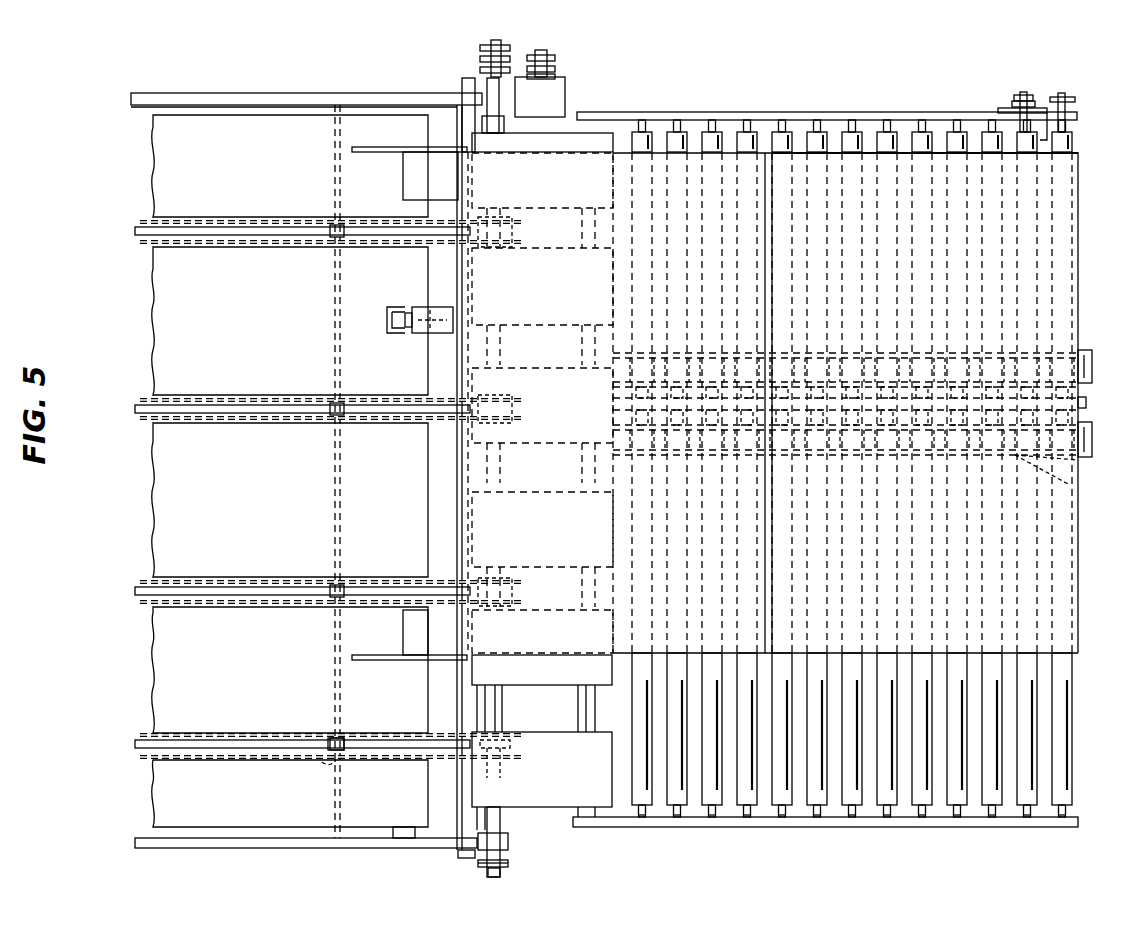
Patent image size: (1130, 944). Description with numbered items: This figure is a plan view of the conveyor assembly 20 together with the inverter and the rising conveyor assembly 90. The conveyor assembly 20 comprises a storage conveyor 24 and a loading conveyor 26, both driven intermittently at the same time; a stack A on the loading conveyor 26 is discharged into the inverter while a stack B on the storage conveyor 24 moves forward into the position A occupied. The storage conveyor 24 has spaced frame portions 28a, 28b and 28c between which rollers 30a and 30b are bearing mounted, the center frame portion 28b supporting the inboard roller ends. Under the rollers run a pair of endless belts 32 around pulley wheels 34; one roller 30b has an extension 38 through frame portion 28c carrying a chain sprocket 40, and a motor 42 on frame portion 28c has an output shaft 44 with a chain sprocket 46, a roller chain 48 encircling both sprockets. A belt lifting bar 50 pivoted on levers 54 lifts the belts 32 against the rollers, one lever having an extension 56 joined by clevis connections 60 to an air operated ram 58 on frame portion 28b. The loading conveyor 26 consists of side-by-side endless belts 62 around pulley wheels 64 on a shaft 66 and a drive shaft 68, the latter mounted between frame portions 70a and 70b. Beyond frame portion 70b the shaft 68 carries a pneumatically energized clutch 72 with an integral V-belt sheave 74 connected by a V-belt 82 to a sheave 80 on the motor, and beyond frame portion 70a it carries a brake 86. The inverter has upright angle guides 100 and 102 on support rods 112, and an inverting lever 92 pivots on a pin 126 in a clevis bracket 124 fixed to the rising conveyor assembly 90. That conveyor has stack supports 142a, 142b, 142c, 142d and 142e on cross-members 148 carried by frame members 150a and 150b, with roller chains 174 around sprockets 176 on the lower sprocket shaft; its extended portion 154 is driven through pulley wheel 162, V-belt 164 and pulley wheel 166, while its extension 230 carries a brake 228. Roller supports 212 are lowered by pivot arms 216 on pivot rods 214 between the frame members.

The conveyor assembly 20 is at (745, 78).
The storage conveyor 24 is at (880, 98).
The loading conveyor 26 is at (692, 105).
The frame portion 28a is at (700, 828).
The frame portion 28b is at (1092, 398).
The frame portion 28c is at (668, 95).
The rollers 30a is at (780, 795).
The rollers 30b is at (772, 132).
The driven endless belts 32 is at (1040, 458).
The pulley wheels 34 is at (625, 347).
The extension 38 is at (1063, 93).
The chain sprocket 40 is at (1075, 98).
The motor 42 is at (998, 110).
The output shaft 44 is at (1022, 95).
The chain sprocket 46 is at (1015, 100).
The roller chain 48 is at (1027, 98).
The belt lifting bar 50 is at (1070, 485).
The levers 54 is at (1086, 404).
The extension 56 is at (635, 405).
The air operated ram 58 is at (650, 452).
The clevis connections 60 is at (635, 428).
The endless belts 62 is at (565, 786).
The pulley wheels 64 is at (570, 730).
The shaft 66 is at (580, 584).
The drive shaft 68 is at (495, 818).
The frame portion 70a is at (508, 845).
The frame portion 70b is at (486, 130).
The pneumatically energized clutch 72 is at (505, 83).
The V-belt sheave 74 is at (480, 70).
The V-belt sheave 80 is at (555, 77).
The V-belt 82 is at (527, 58).
The shaft-mounted brake 86 is at (470, 890).
The rising conveyor assembly 90 is at (258, 80).
The inverting lever 92 is at (440, 335).
The upright angle guide 100 is at (395, 643).
The upright angle guide 102 is at (400, 160).
The support rods 112 is at (462, 118).
The clevis bracket 124 is at (390, 328).
The pin 126 is at (445, 312).
The stack support 142a is at (155, 820).
The stack support 142b is at (155, 692).
The stack support 142c is at (155, 517).
The stack support 142d is at (155, 342).
The stack support 142e is at (155, 175).
The cross-members 148 is at (400, 838).
The frame member 150a is at (212, 848).
The frame member 150b is at (278, 93).
The extended portion 154 is at (480, 47).
The pulley wheel 162 is at (480, 59).
The V-belt 164 is at (520, 43).
The pulley wheel 166 is at (555, 62).
The roller chains 174 is at (255, 735).
The sprockets 176 is at (512, 740).
The roller supports 212 is at (140, 592).
The pivot rods 214 is at (336, 760).
The pivot arms 216 is at (330, 738).
The brake 228 is at (460, 888).
The extension 230 is at (502, 876).
The stack A is at (612, 660).
The stack B is at (1062, 662).